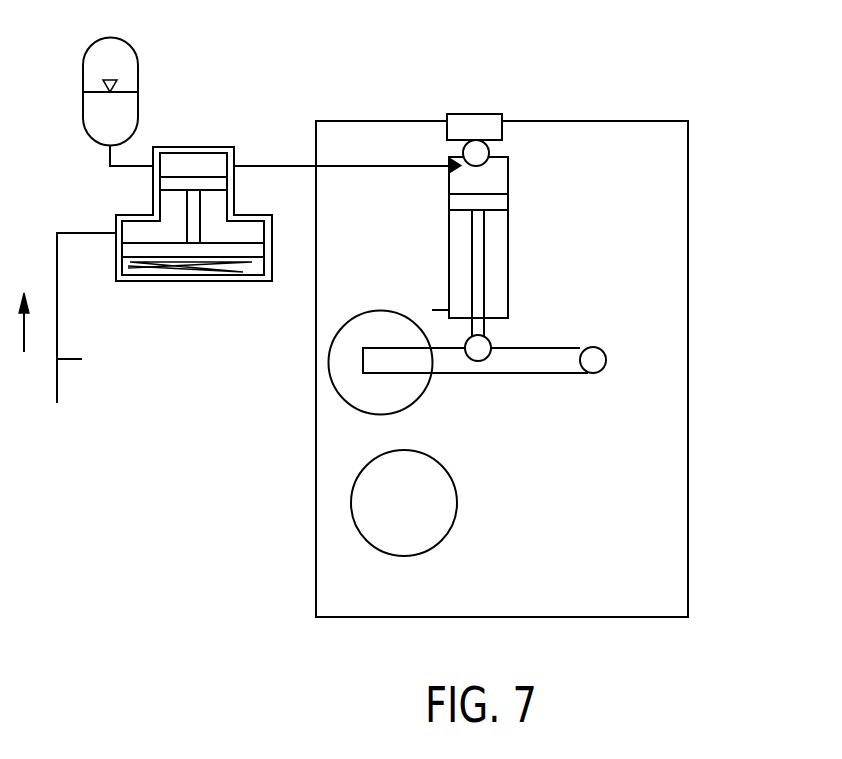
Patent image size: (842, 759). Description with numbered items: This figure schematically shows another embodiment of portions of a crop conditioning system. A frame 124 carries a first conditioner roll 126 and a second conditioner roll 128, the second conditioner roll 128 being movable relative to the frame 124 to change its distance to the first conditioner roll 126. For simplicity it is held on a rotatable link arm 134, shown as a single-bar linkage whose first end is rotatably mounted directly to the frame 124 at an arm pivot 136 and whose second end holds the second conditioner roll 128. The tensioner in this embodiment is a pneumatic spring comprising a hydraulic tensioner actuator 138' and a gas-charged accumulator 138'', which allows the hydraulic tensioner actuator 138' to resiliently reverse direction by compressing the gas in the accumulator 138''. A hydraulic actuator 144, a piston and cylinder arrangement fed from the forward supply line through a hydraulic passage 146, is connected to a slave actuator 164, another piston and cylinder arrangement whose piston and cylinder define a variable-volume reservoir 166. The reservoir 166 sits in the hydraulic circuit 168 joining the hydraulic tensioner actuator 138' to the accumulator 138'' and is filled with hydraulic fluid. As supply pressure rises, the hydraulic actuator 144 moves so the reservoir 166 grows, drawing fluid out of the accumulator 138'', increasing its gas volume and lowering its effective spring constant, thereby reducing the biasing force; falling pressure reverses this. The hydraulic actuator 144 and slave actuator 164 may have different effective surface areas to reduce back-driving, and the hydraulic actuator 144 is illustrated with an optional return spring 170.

The frame 124 is at (383, 138).
The first conditioner roll 126 is at (383, 520).
The second conditioner roll 128 is at (345, 370).
The rotatable link arm 134 is at (543, 348).
The arm pivot 136 is at (598, 348).
The hydraulic tensioner actuator 138' is at (511, 206).
The gas-charged accumulator 138'' is at (139, 99).
The hydraulic actuator 144 is at (143, 228).
The hydraulic passage 146 is at (82, 359).
The slave actuator 164 is at (228, 147).
The variable-volume reservoir 166 is at (198, 165).
The hydraulic circuit 168 is at (258, 166).
The return spring 170 is at (196, 265).